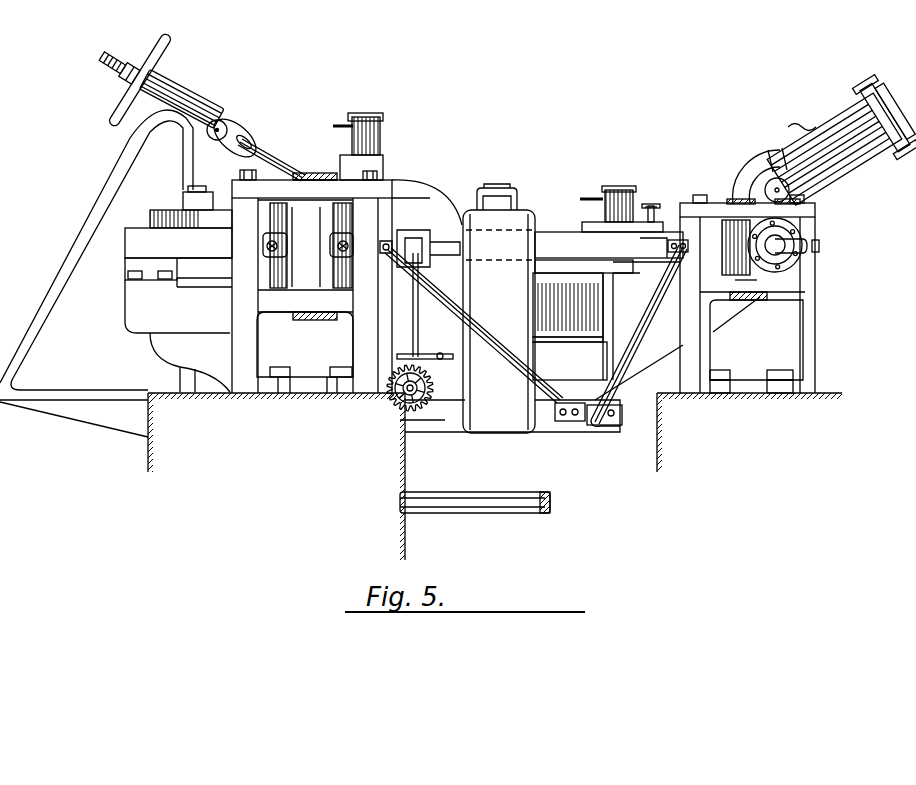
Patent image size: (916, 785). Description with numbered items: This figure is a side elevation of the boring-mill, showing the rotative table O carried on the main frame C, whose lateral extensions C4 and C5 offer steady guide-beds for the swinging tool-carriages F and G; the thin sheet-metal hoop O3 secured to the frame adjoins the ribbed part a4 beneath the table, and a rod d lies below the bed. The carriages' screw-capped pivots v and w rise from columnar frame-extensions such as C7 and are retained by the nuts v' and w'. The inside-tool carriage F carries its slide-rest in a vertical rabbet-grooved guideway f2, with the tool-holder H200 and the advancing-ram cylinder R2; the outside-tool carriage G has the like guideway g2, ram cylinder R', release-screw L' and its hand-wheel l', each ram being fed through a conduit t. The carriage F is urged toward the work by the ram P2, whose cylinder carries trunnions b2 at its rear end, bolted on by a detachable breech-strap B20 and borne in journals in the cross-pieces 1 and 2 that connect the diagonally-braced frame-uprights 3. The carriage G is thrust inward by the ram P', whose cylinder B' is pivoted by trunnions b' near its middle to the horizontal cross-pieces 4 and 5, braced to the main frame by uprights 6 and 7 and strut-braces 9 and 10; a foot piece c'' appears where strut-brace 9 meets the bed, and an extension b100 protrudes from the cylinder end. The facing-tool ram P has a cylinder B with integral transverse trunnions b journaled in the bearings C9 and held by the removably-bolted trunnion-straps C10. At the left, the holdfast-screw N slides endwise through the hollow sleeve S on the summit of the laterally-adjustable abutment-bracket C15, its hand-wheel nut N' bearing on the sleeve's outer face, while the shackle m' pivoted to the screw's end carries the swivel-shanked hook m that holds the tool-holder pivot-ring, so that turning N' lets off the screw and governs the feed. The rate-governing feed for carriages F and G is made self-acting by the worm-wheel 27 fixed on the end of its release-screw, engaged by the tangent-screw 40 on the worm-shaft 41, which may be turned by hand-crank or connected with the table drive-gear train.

The main frame C is at (421, 438).
The laterally-adjustable abutment-bracket C15 is at (96, 250).
The holdfast-screw N is at (123, 69).
The hand-wheel nut N' is at (116, 87).
The hollow sleeve S is at (188, 104).
The shackle m' is at (235, 131).
The swivel-shanked hook m is at (271, 160).
The cross-piece 1 is at (312, 184).
The frame-uprights 3 is at (312, 295).
The breech-strap B20 is at (305, 245).
The cross-piece 2 is at (305, 303).
The trunnions b2 is at (313, 336).
The hydraulic ram P2 is at (315, 153).
The advancing-ram cylinder R2 is at (381, 132).
The ram-feed conduit t is at (333, 125).
The rabbet-grooved guideway f2 is at (361, 167).
The tool-holder H200 is at (482, 300).
The worm-wheel 27 is at (434, 372).
The tangent-screw 40 is at (420, 357).
The worm-shaft 41 is at (440, 356).
The columnar frame-extension C7 is at (499, 321).
The screw-capped pivot v is at (501, 189).
The nut v' is at (497, 202).
The outside tool-carriage G is at (609, 245).
The rabbet-grooved guideway g2 is at (585, 226).
The advancing-ram cylinder R' is at (619, 191).
The release-screw L' is at (652, 202).
The release-screw hand-wheel l' is at (658, 202).
The rotative table O is at (584, 274).
The ribbed block a4 is at (568, 307).
The sheet-metal hoop O3 is at (573, 326).
The lateral frame extension C4 is at (634, 270).
The strut-brace 9 is at (643, 340).
The foot bracket c'' is at (616, 415).
The trunnion-bearing cross-piece 4 is at (747, 208).
The upright 6 is at (747, 254).
The upright 7 is at (747, 342).
The strut-brace 10 is at (718, 330).
The trunnions b' is at (748, 309).
The trunnion-bearing cross-piece 5 is at (744, 287).
The ram cylinder B' is at (792, 265).
The shaft end b100 is at (804, 254).
The advancing ram P' is at (833, 249).
The trunnion bearings C9 is at (756, 176).
The trunnion-straps C10 is at (769, 153).
The trunnions b is at (777, 190).
The oscillating hydraulic ram P is at (802, 114).
The ram cylinder B is at (837, 145).
The inside tool-carriage F is at (191, 219).
The lateral frame extension C5 is at (178, 310).
The nut w' is at (199, 201).
The screw-capped pivot w is at (203, 182).
The rod d is at (475, 502).